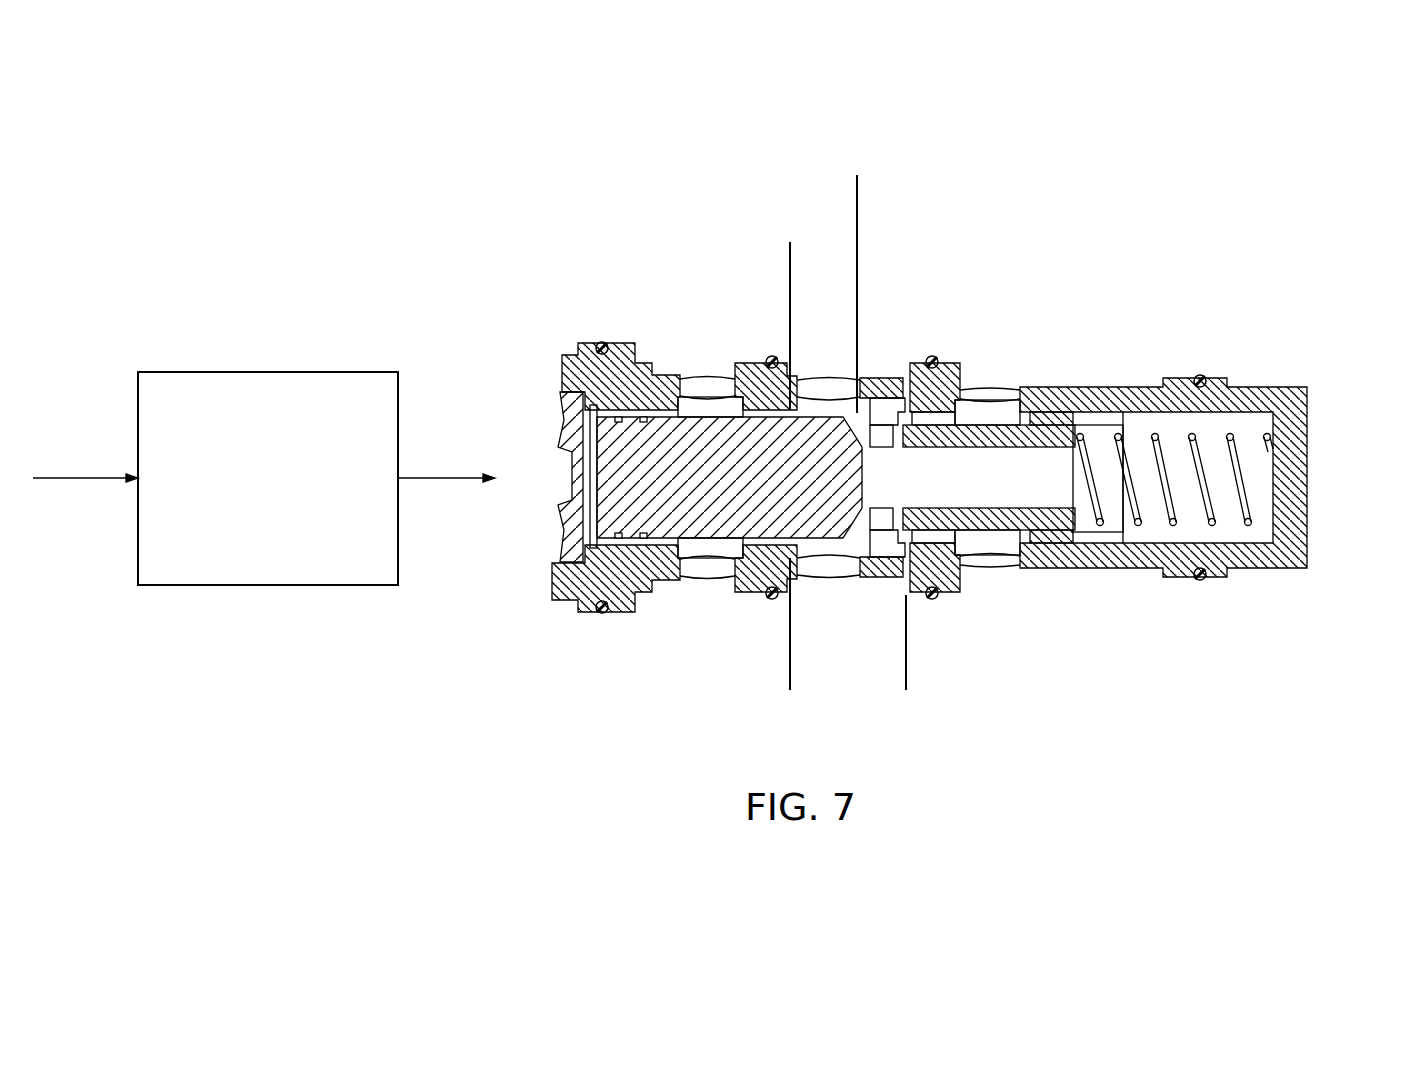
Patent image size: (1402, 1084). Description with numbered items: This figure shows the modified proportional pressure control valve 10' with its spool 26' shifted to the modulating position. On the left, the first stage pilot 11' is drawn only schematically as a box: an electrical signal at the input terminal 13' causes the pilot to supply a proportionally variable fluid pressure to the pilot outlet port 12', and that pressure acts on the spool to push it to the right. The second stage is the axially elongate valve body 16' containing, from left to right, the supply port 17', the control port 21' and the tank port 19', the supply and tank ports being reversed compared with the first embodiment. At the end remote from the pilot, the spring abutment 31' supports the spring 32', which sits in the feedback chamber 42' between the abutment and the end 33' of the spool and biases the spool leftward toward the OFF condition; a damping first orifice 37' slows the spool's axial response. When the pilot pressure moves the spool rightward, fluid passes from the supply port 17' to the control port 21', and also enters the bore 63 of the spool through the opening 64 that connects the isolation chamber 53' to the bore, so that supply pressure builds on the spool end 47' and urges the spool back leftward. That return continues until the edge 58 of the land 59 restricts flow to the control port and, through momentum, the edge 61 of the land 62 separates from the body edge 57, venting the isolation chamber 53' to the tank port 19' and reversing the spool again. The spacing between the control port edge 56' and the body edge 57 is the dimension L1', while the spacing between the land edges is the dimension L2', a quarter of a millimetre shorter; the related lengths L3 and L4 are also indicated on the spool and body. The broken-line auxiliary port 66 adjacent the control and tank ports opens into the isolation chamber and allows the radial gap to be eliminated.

The proportional pressure control valve 10' is at (922, 437).
The first stage pilot 11' is at (268, 420).
The pilot outlet port 12' is at (522, 477).
The input terminal 13' is at (82, 427).
The valve body 16' is at (929, 513).
The supply port 17' is at (692, 339).
The tank port 19' is at (1015, 371).
The control port 21' is at (824, 338).
The spool 26' is at (729, 519).
The spring abutment 31' is at (1347, 450).
The spring 32' is at (1313, 584).
The end of the spool 33' is at (1187, 361).
The first orifice 37' is at (482, 445).
The feedback chamber 42' is at (1210, 409).
The end of the spool 47' is at (1175, 548).
The isolation chamber 53' is at (903, 381).
The edge of the control port 56' is at (828, 359).
The edge between isolation chamber and tank port 57 is at (912, 365).
The edge of the land 58 is at (787, 541).
The land 59 is at (830, 557).
The edge on the land 61 is at (953, 553).
The land 62 is at (938, 595).
The bore 63 is at (980, 510).
The opening 64 is at (882, 520).
The auxiliary port 66 is at (877, 380).
The dimension L1' is at (850, 683).
The dimension L2' is at (848, 647).
The dimension L3 is at (822, 203).
The dimension L4 is at (838, 255).